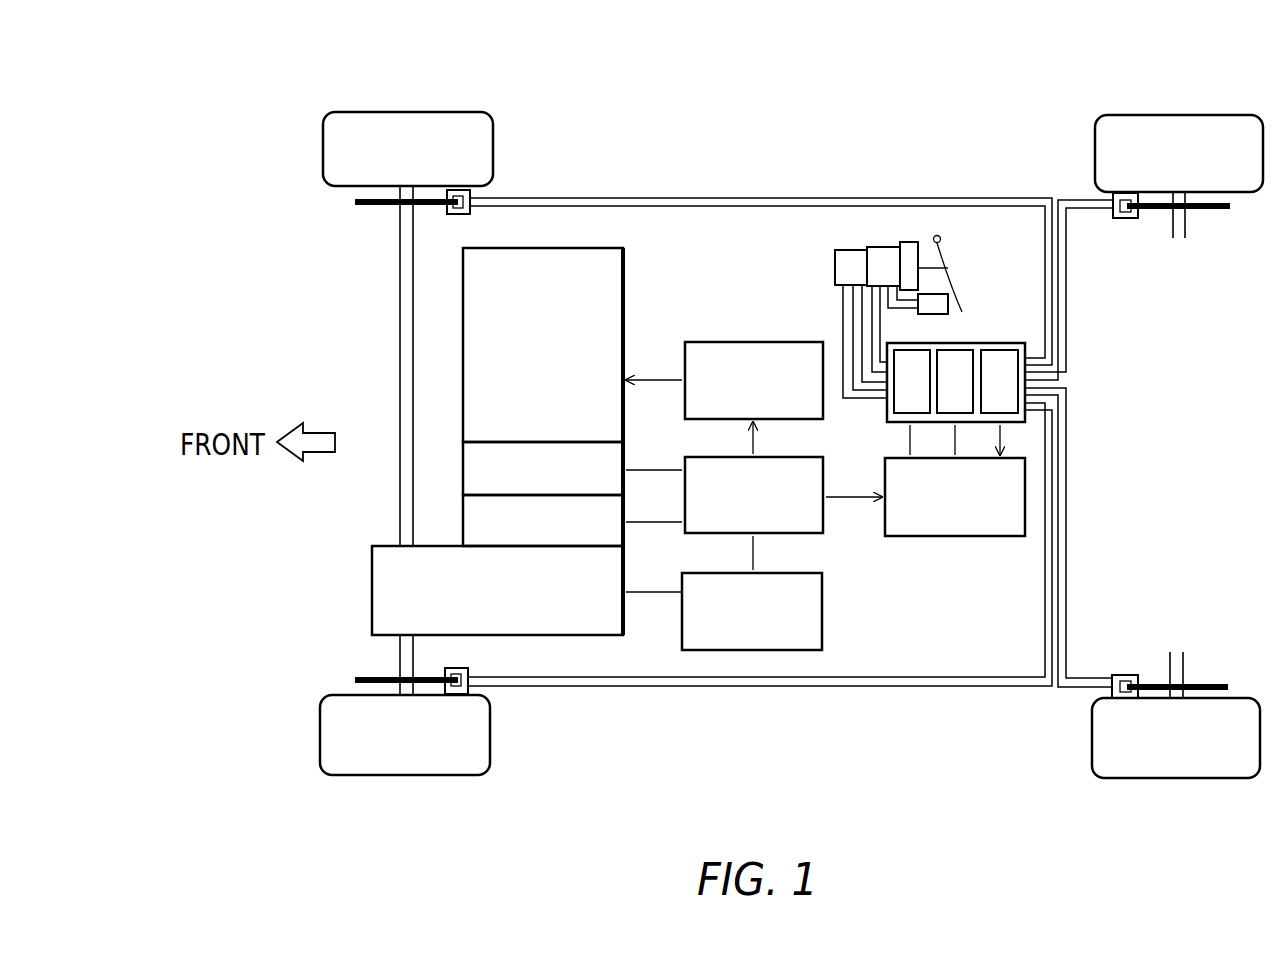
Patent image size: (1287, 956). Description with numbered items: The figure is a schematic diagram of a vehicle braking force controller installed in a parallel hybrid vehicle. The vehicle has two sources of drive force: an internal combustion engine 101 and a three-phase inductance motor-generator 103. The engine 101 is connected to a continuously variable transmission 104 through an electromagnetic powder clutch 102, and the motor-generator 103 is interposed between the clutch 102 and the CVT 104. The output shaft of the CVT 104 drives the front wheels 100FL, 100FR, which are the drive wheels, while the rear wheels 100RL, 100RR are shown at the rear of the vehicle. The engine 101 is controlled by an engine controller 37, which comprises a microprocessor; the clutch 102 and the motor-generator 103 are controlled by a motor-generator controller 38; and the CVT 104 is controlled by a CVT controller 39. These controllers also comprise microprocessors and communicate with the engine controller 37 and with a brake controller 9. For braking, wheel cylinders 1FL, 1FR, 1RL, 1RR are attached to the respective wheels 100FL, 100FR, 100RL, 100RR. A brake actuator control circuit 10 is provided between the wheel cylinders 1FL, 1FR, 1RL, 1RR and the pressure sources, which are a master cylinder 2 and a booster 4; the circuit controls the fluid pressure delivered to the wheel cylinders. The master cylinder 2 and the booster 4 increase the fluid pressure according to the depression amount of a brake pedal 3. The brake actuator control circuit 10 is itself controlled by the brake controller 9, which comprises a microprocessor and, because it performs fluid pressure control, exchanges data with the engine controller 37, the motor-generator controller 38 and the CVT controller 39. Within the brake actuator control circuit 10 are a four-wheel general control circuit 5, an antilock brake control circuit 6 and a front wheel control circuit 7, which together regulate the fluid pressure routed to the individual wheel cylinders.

The front right wheel 100FR is at (430, 112).
The front left wheel 100FL is at (425, 775).
The rear right wheel 100RR is at (1182, 115).
The rear left wheel 100RL is at (1200, 778).
The wheel cylinder 1FR is at (480, 213).
The wheel cylinder 1FL is at (472, 667).
The wheel cylinder 1RR is at (1130, 228).
The wheel cylinder 1RL is at (1130, 666).
The internal combustion engine 101 is at (624, 297).
The electromagnetic powder clutch 102 is at (623, 450).
The three-phase inductance motor-generator 103 is at (623, 538).
The continuously variable transmission 104 is at (623, 620).
The engine controller 37 is at (740, 341).
The motor-generator controller 38 is at (794, 455).
The CVT controller 39 is at (828, 597).
The brake controller 9 is at (948, 542).
The master cylinder 2 is at (864, 248).
The booster 4 is at (891, 243).
The brake pedal 3 is at (964, 280).
The brake actuator control circuit 10 is at (1005, 343).
The four-wheel general control circuit 5 is at (914, 343).
The antilock brake control circuit 6 is at (969, 343).
The front wheel control circuit 7 is at (999, 343).